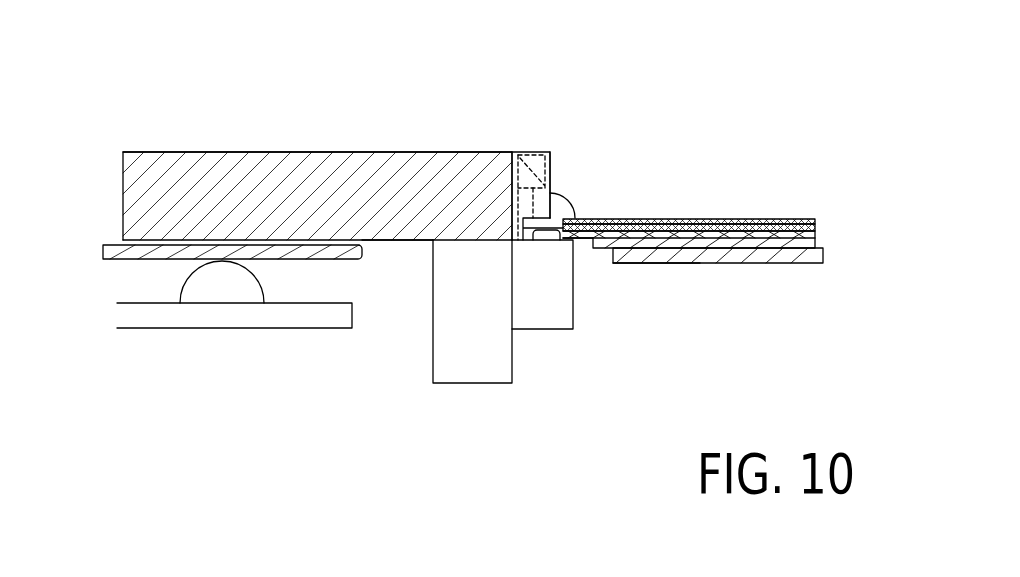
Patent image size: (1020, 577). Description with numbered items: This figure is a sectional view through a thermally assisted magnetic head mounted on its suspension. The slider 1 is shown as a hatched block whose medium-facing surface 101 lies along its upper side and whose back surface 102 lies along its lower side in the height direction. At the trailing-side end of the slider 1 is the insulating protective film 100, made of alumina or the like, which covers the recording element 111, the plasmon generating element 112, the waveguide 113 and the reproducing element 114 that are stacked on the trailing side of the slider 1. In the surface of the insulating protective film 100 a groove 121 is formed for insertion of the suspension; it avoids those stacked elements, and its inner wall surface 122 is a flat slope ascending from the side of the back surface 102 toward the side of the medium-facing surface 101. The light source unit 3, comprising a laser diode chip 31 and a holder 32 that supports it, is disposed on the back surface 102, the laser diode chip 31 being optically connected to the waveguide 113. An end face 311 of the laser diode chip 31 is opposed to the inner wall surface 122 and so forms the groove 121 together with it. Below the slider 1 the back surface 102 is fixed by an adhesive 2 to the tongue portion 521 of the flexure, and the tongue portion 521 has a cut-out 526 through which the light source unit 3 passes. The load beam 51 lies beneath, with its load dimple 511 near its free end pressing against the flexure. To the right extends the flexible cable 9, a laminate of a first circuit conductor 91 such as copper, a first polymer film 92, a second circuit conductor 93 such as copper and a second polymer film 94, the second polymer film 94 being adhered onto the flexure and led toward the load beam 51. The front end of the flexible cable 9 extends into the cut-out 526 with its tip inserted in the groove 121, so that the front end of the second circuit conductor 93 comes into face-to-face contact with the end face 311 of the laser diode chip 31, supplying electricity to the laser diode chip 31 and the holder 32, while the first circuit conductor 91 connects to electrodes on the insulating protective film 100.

The slider 1 is at (178, 162).
The medium-facing surface 101 is at (407, 152).
The back surface 102 is at (414, 242).
The insulating protective film 100 is at (547, 182).
The recording element 111 is at (552, 192).
The plasmon generating element 112 is at (524, 157).
The waveguide 113 is at (552, 186).
The reproducing element 114 is at (497, 158).
The groove 121 is at (590, 206).
The inner wall surface 122 is at (563, 194).
The adhesive 2 is at (152, 261).
The light source unit 3 is at (522, 312).
The laser diode chip 31 is at (558, 319).
The holder 32 is at (502, 365).
The end face 311 is at (573, 242).
The load beam 51 is at (234, 323).
The load dimple 511 is at (213, 290).
The cut-out 526 is at (421, 270).
The tongue portion 521 is at (675, 264).
The flexible cable 9 is at (709, 224).
The first circuit conductor 91 is at (815, 222).
The first polymer film 92 is at (817, 234).
The second circuit conductor 93 is at (817, 242).
The second polymer film 94 is at (820, 250).